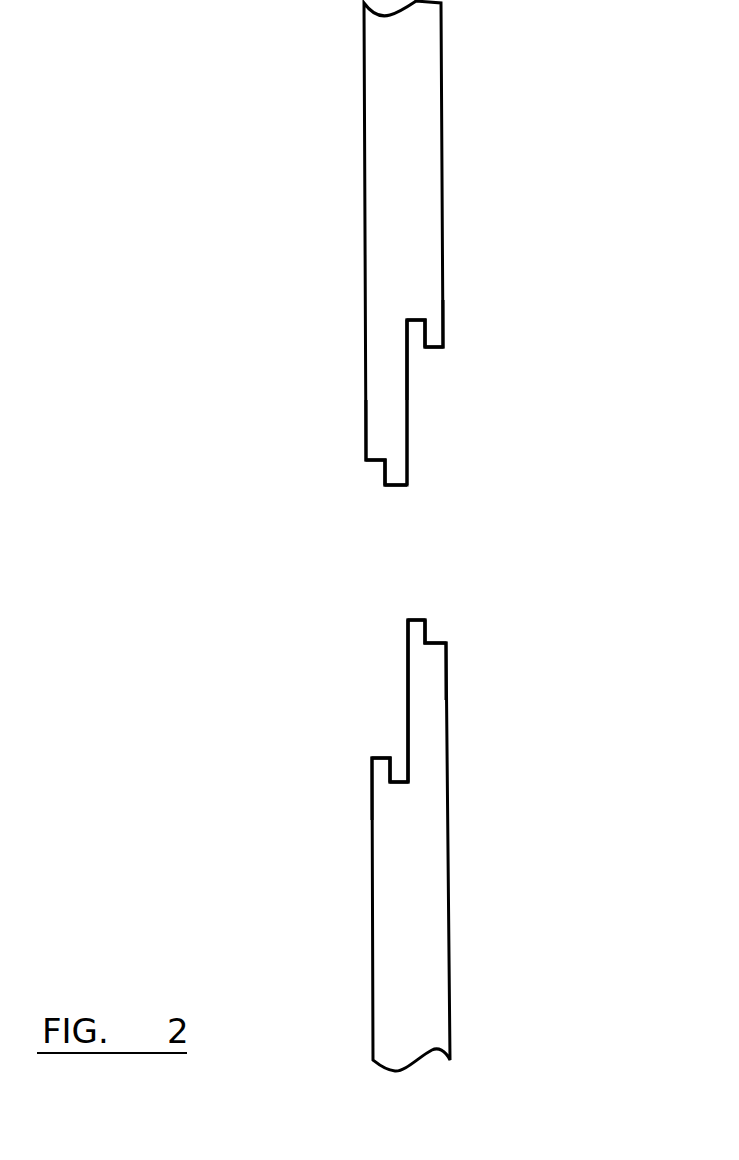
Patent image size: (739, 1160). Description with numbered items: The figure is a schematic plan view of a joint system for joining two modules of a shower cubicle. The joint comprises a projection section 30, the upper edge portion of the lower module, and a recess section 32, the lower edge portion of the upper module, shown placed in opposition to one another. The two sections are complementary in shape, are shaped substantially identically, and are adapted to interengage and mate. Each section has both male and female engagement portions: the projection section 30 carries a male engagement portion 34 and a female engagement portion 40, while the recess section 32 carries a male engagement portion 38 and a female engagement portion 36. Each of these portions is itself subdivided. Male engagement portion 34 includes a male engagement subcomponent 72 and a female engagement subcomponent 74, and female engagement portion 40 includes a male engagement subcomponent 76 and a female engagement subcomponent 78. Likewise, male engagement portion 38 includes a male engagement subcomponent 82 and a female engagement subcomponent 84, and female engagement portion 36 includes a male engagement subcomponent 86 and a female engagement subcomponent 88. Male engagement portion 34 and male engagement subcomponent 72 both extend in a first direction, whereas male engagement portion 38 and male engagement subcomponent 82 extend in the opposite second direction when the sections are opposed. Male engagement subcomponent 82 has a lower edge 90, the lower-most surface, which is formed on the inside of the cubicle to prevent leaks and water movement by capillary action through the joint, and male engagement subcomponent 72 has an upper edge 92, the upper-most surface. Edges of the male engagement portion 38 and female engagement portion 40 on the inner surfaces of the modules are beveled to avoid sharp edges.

The projection section 30 is at (448, 955).
The recess section 32 is at (443, 175).
The male engagement portion 34 is at (476, 587).
The female engagement portion 36 is at (450, 410).
The male engagement portion 38 is at (334, 512).
The female engagement portion 40 is at (364, 696).
The male engagement subcomponent 72 is at (418, 628).
The female engagement subcomponent 74 is at (435, 650).
The male engagement subcomponent 76 is at (380, 768).
The female engagement subcomponent 78 is at (398, 792).
The male engagement subcomponent 82 is at (395, 473).
The female engagement subcomponent 84 is at (374, 452).
The male engagement subcomponent 86 is at (437, 340).
The female engagement subcomponent 88 is at (418, 312).
The lower edge 90 is at (397, 480).
The upper edge 92 is at (416, 620).